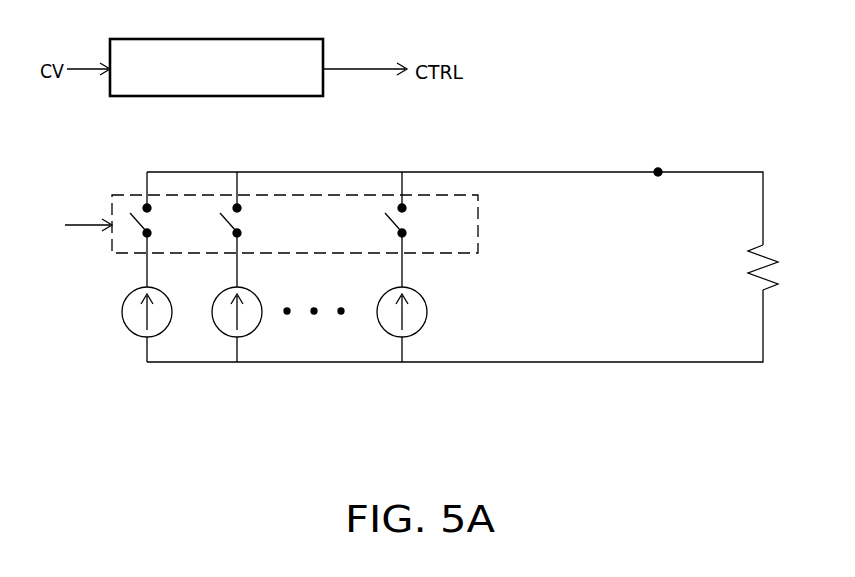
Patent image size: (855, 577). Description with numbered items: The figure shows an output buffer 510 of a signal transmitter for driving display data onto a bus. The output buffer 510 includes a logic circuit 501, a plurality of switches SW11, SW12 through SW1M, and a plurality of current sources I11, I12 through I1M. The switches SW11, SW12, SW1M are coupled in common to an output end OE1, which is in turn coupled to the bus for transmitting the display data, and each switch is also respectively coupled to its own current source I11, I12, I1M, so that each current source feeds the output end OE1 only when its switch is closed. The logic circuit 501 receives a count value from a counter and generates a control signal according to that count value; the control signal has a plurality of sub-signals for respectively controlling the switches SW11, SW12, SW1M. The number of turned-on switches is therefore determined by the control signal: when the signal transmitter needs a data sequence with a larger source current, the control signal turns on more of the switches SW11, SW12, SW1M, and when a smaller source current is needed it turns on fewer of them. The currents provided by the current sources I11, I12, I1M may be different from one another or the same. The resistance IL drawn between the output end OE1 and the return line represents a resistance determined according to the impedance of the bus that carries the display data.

The logic circuit 501 is at (274, 39).
The output buffer 510 is at (411, 274).
The output end OE1 is at (659, 170).
The resistance IL is at (777, 267).
The switch SW11 is at (166, 221).
The switch SW12 is at (256, 221).
The switch SW1M is at (424, 221).
The current source I11 is at (128, 328).
The current source I12 is at (253, 335).
The current source I1M is at (427, 317).